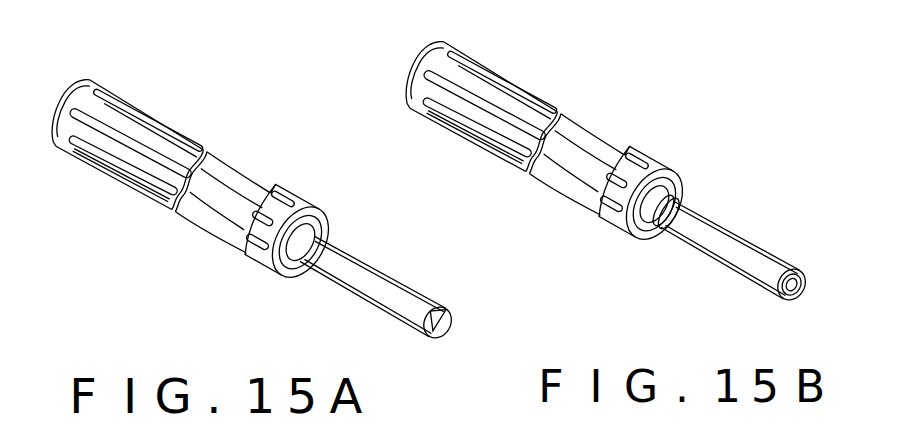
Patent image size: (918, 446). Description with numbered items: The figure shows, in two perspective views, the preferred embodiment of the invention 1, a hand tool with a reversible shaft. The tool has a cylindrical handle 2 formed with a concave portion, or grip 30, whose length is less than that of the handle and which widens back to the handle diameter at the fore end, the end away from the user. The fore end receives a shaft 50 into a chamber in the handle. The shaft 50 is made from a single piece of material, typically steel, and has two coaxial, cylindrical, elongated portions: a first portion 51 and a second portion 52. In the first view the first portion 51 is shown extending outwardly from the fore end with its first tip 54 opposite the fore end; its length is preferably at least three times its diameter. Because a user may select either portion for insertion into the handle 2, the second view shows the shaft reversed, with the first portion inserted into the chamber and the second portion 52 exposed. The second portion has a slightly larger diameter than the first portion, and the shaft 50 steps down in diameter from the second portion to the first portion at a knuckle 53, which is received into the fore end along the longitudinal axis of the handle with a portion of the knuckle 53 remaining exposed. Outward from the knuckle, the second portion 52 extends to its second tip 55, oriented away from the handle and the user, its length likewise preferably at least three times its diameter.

In FIG. 15A, the invention 1 is at (133, 203).
In FIG. 15B, the invention 1 is at (579, 73).
In FIG. 15A, the cylindrical handle 2 is at (147, 113).
In FIG. 15B, the cylindrical handle 2 is at (503, 75).
In FIG. 15A, the grip 30 is at (240, 170).
In FIG. 15B, the grip 30 is at (593, 133).
In FIG. 15A, the shaft 50 is at (347, 228).
In FIG. 15B, the shaft 50 is at (717, 198).
In FIG. 15A, the first portion 51 is at (364, 248).
In FIG. 15B, the second portion 52 is at (752, 237).
In FIG. 15B, the knuckle 53 is at (675, 199).
In FIG. 15A, the first tip 54 is at (447, 310).
In FIG. 15B, the second tip 55 is at (798, 270).